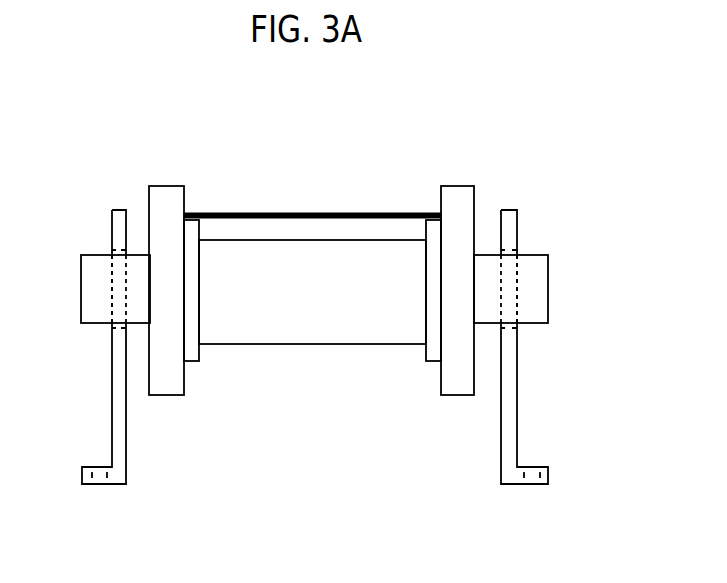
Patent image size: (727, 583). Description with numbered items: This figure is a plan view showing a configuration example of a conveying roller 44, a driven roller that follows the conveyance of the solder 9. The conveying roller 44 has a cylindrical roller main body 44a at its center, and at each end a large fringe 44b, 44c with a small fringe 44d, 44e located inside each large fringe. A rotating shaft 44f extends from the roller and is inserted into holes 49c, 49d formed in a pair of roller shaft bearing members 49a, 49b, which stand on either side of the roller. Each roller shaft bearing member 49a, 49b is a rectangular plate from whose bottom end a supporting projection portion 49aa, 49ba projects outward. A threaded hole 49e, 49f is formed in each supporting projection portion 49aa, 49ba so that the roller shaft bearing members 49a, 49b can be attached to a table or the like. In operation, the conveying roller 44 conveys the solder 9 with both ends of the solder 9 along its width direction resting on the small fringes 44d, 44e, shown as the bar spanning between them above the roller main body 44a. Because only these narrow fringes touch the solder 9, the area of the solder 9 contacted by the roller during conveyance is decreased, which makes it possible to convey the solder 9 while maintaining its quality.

The conveying roller 44 is at (101, 166).
The solder 9 is at (363, 213).
The cylindrical roller main body 44a is at (325, 344).
The large fringe 44b is at (163, 395).
The large fringe 44c is at (453, 395).
The small fringe 44d is at (200, 354).
The small fringe 44e is at (425, 356).
The rotating shaft 44f is at (518, 327).
The roller shaft bearing member 49a is at (106, 373).
The supporting projection portion 49aa is at (113, 484).
The roller shaft bearing member 49b is at (527, 374).
The supporting projection portion 49ba is at (513, 484).
The hole 49c is at (117, 326).
The hole 49d is at (518, 327).
The threaded hole 49e is at (98, 463).
The threaded hole 49f is at (570, 450).